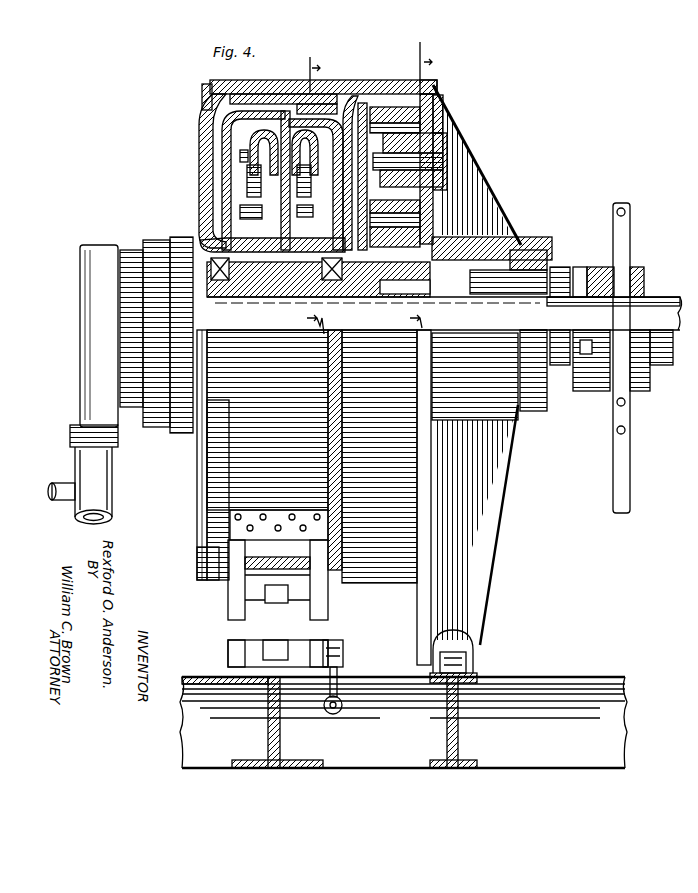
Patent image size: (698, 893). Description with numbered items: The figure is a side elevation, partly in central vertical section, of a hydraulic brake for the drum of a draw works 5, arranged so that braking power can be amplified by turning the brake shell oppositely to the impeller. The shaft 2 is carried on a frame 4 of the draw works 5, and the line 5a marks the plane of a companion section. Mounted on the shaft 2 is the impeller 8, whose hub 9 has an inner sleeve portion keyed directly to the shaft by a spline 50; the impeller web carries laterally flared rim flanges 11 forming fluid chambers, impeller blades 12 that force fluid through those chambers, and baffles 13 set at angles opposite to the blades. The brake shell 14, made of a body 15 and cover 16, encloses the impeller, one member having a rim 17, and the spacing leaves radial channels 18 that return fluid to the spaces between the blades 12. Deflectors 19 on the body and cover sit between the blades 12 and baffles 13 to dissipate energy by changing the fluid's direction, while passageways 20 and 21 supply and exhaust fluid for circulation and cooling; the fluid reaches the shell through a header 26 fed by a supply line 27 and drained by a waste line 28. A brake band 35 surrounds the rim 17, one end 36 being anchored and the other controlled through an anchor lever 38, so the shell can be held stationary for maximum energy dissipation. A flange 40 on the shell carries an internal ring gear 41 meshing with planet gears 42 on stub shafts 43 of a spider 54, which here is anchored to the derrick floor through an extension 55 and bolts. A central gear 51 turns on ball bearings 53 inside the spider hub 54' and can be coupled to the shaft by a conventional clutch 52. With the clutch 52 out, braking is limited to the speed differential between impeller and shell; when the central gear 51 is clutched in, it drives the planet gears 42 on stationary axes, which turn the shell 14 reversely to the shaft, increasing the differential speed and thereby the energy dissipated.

The shaft 2 is at (681, 297).
The frame 4 is at (550, 680).
The draw works 5 is at (412, 185).
The section line 5a- 5a is at (301, 195).
The impeller 8 is at (222, 80).
The hub 9 is at (250, 240).
The rim flanges 11 is at (257, 128).
The impeller blades 12 is at (260, 213).
The baffles 13 is at (258, 145).
The brake shell 14 is at (203, 574).
The body 15 is at (349, 98).
The cover 16 is at (204, 86).
The rim 17 is at (258, 100).
The radial channels 18 is at (237, 165).
The deflectors 19 is at (260, 187).
The passageway 20 is at (362, 102).
The passageway 21 is at (213, 153).
The header 26 is at (157, 240).
The line 27 is at (112, 497).
The line 28 is at (57, 480).
The brake band 35 is at (207, 478).
The end 36 is at (227, 583).
The anchor lever 38 is at (247, 593).
The flange 40 is at (430, 74).
The internal ring gear 41 is at (437, 92).
The planet gears 42 is at (441, 103).
The stub shafts 43 is at (443, 160).
The spline 50 is at (253, 311).
The central gear 51 is at (432, 218).
The clutch 52 is at (605, 268).
The ball bearings 53 is at (505, 305).
The spider 54 is at (492, 223).
The hub 54' is at (508, 249).
The extension 55 is at (480, 593).